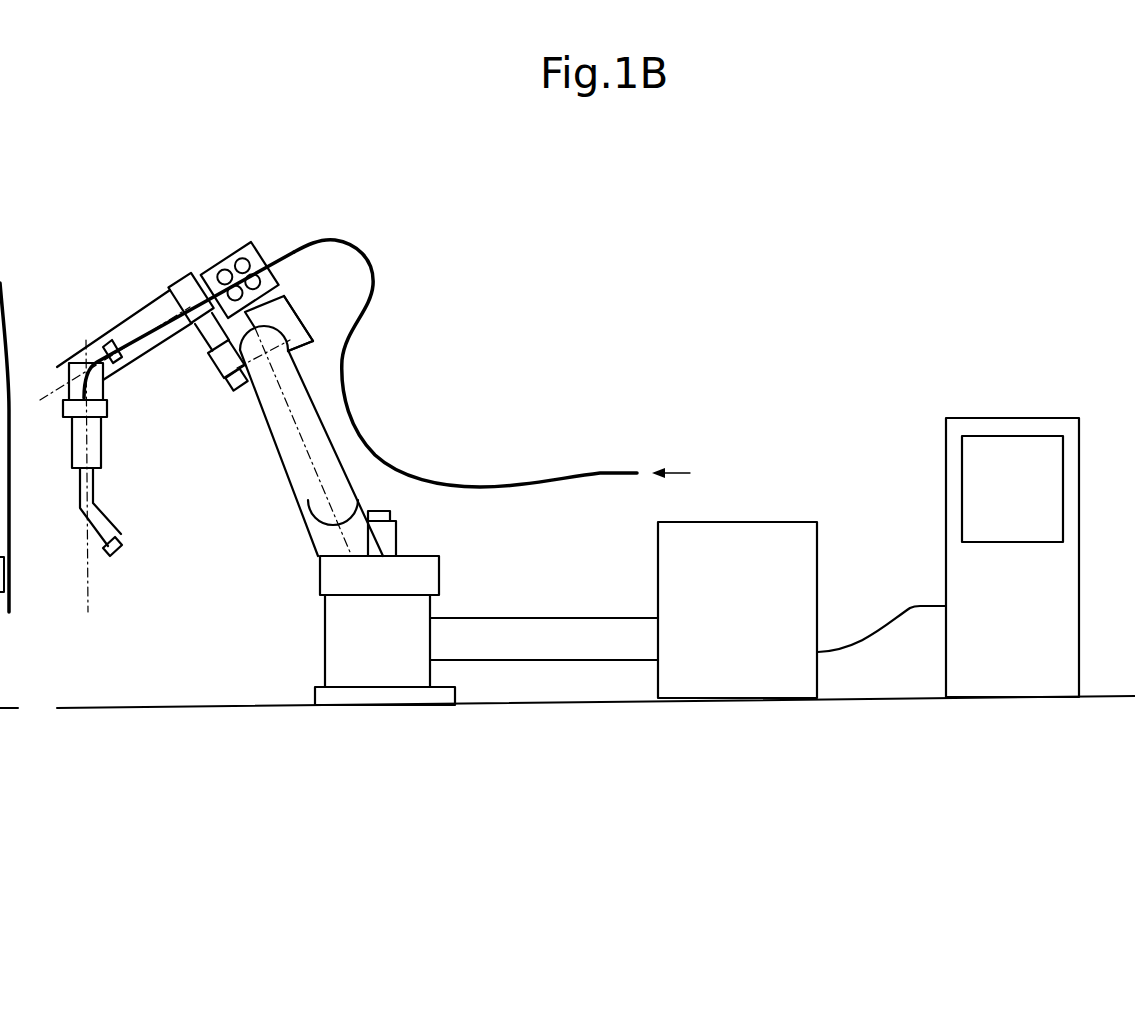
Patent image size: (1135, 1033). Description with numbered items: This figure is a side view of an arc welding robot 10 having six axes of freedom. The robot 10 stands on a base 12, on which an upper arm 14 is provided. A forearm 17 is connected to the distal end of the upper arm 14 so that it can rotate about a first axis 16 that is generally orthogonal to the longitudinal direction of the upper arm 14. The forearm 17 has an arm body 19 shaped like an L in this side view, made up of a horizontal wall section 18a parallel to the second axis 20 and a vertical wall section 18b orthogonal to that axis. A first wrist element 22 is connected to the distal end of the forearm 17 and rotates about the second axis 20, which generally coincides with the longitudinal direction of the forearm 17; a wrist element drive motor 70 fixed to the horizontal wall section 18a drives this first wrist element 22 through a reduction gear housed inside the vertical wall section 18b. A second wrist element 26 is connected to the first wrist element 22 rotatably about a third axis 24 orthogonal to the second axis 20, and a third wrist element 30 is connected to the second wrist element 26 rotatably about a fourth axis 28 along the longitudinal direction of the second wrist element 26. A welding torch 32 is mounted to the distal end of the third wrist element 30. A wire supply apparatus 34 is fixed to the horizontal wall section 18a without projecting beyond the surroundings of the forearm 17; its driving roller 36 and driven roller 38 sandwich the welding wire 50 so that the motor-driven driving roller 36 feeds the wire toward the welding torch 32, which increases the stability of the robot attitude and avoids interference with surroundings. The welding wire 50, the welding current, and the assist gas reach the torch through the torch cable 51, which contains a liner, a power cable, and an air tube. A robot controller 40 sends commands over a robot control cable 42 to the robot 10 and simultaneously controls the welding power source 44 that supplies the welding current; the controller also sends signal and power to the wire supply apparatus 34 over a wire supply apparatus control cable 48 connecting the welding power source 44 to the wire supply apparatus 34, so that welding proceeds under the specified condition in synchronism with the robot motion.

The robot 10 is at (218, 755).
The base 12 is at (387, 672).
The upper arm 14 is at (310, 485).
The first axis 16 is at (257, 397).
The forearm 17 is at (376, 298).
The horizontal wall section 18a is at (312, 348).
The vertical wall section 18b is at (186, 288).
The arm body 19 is at (310, 322).
The second axis 20 is at (62, 399).
The first wrist element 22 is at (128, 334).
The third axis 24 is at (78, 368).
The second wrist element 26 is at (97, 380).
The fourth axis 28 is at (83, 445).
The third wrist element 30 is at (100, 417).
The welding torch 32 is at (105, 552).
The wire supply apparatus 34 is at (243, 250).
The driving roller 36 is at (226, 262).
The driven roller 38 is at (208, 352).
The robot controller 40 is at (1062, 630).
The robot control cable 42 is at (597, 660).
The welding power source 44 is at (793, 585).
The wire supply apparatus control cable 48 is at (468, 620).
The welding wire 50 is at (537, 485).
The torch cable 51 is at (125, 330).
The wrist element drive motor 70 is at (224, 376).